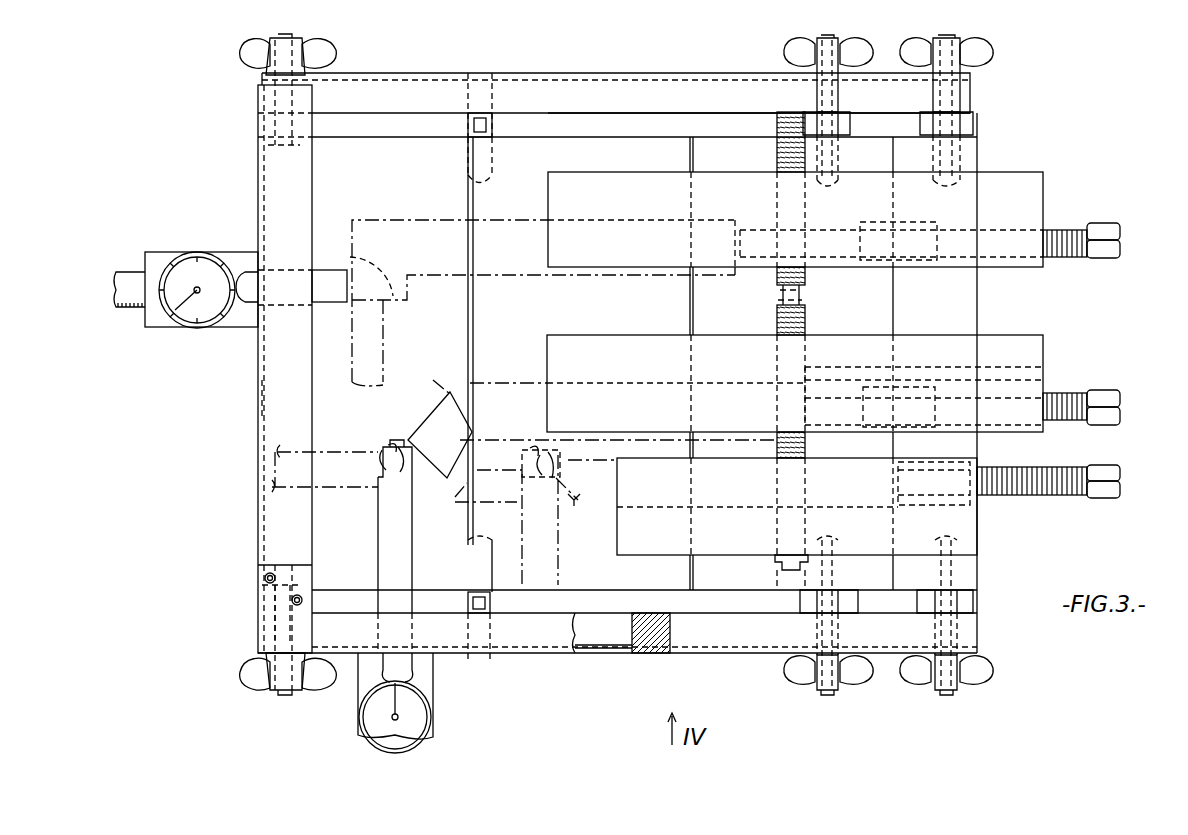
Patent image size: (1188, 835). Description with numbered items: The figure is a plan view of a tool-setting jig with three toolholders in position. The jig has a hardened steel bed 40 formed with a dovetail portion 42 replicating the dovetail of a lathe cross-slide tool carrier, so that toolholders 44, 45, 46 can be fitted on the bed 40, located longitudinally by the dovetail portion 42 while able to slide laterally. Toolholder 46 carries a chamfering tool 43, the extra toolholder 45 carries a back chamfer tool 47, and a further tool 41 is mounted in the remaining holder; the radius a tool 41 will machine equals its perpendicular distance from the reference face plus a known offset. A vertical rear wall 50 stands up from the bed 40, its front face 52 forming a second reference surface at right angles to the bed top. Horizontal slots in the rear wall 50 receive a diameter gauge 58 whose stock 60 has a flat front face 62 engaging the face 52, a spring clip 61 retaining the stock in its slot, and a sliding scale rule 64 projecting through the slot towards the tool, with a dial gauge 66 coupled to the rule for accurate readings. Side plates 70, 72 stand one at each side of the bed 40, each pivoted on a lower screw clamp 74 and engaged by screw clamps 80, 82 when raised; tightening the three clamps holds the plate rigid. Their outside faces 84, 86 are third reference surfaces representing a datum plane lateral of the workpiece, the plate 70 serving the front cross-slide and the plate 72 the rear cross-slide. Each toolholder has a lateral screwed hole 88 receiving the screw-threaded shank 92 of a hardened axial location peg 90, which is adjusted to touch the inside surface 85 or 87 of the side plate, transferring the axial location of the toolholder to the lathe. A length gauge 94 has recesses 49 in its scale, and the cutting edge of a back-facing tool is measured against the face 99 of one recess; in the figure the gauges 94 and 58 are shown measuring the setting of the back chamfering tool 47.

The bed 40 is at (978, 525).
The tool 41 is at (403, 222).
The dovetail portion 42 is at (688, 326).
The chamfering tool 43 is at (440, 421).
The toolholder 44 is at (592, 184).
The toolholder 45 is at (628, 545).
The toolholder 46 is at (548, 362).
The back chamfer tool 47 is at (574, 516).
The recesses 49 is at (378, 450).
The rear wall 50 is at (294, 410).
The front face 52 is at (258, 384).
The diameter gauge 58 is at (240, 250).
The stock 60 is at (160, 262).
The spring clip 61 is at (244, 306).
The flat front face 62 is at (268, 320).
The sliding scale rule 64 is at (326, 268).
The dial gauge 66 is at (190, 318).
The side plate 70 is at (526, 655).
The side plate 72 is at (412, 82).
The lower screw clamp 74 is at (986, 58).
The screw clamp 80 is at (314, 46).
The screw clamp 82 is at (784, 54).
The outside face 84 is at (604, 656).
The inside surface 85 is at (648, 612).
The outside face 86 is at (688, 80).
The inside surface 87 is at (654, 116).
The lateral screwed hole 88 is at (778, 205).
The axial location peg 90 is at (776, 166).
The screw-threaded shank 92 is at (776, 310).
The length gauge 94 is at (432, 692).
The face 99 is at (392, 446).